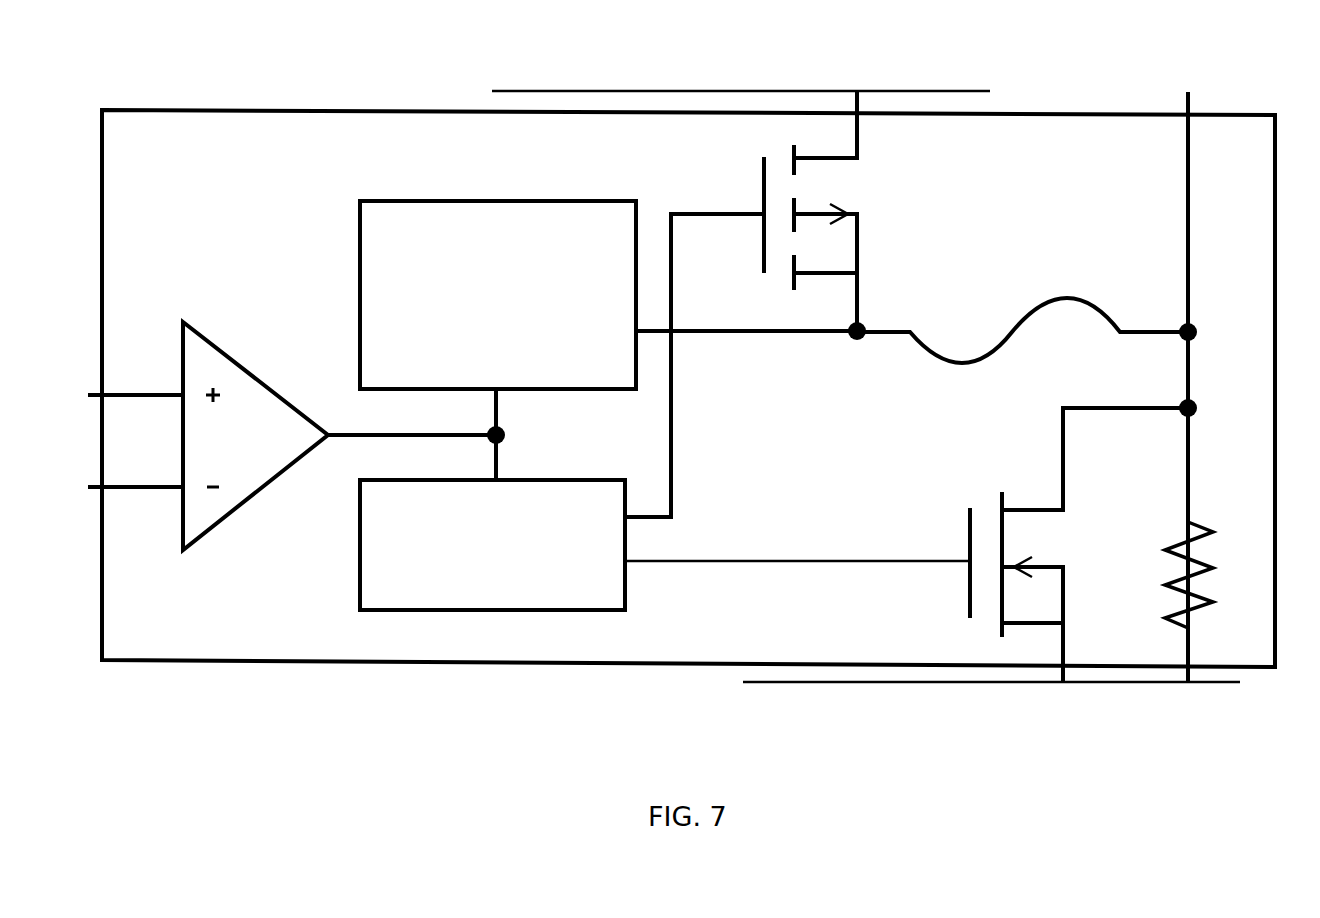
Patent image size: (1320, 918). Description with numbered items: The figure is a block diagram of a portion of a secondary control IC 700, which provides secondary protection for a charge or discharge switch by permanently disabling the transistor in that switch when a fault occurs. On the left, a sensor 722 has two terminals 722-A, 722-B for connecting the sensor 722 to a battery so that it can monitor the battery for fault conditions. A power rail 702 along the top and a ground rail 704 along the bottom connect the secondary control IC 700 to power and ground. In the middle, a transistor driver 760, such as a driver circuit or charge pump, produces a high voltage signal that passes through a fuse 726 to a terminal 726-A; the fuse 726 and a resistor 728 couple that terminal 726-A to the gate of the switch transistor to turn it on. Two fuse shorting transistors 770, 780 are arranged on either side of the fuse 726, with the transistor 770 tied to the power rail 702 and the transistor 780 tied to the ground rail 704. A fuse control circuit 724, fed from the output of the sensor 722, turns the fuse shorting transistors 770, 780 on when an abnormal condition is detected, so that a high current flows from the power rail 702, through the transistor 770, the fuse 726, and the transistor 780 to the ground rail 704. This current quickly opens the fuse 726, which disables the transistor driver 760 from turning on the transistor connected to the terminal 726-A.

The secondary control IC 700 is at (300, 51).
The power rail 702 is at (668, 91).
The ground rail 704 is at (945, 683).
The sensor 722 is at (220, 352).
The terminal 722-A is at (88, 395).
The terminal 722-B is at (88, 482).
The fuse control circuit 724 is at (505, 553).
The fuse 726 is at (1045, 300).
The terminal 726-A is at (1188, 92).
The resistor 728 is at (1170, 568).
The transistor driver 760 is at (517, 307).
The fuse shorting transistor 770 is at (758, 195).
The fuse shorting transistor 780 is at (965, 540).